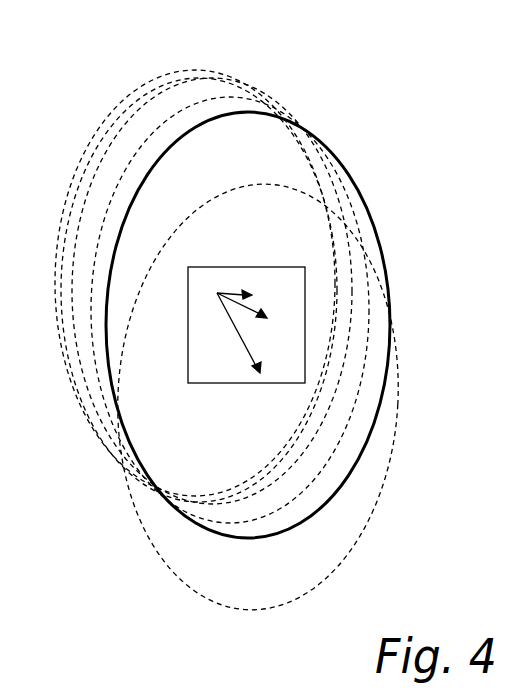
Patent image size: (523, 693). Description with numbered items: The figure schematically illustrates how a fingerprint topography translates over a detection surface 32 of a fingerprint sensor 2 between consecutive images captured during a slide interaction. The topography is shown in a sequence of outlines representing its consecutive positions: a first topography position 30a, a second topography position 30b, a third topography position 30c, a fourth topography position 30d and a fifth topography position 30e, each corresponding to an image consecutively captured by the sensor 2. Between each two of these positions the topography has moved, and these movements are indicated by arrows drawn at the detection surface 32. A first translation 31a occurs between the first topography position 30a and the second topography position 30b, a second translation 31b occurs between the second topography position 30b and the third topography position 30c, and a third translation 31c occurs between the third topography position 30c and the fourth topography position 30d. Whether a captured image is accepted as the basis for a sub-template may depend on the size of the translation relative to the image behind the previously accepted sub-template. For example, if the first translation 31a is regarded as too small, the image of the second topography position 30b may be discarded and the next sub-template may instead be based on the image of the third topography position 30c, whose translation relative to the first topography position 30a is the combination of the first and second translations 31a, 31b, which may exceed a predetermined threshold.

The fingerprint sensor 2 is at (295, 307).
The first topography position 30a is at (95, 146).
The second topography position 30b is at (153, 116).
The third topography position 30c is at (240, 101).
The fourth topography position 30d is at (292, 149).
The fifth topography position 30e is at (348, 540).
The first translation 31a is at (240, 293).
The second translation 31b is at (262, 300).
The third translation 31c is at (243, 350).
The detection surface 32 is at (305, 350).